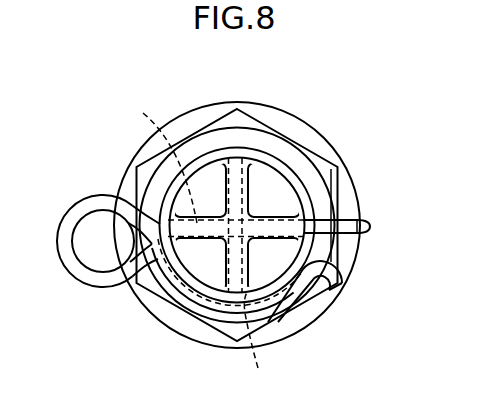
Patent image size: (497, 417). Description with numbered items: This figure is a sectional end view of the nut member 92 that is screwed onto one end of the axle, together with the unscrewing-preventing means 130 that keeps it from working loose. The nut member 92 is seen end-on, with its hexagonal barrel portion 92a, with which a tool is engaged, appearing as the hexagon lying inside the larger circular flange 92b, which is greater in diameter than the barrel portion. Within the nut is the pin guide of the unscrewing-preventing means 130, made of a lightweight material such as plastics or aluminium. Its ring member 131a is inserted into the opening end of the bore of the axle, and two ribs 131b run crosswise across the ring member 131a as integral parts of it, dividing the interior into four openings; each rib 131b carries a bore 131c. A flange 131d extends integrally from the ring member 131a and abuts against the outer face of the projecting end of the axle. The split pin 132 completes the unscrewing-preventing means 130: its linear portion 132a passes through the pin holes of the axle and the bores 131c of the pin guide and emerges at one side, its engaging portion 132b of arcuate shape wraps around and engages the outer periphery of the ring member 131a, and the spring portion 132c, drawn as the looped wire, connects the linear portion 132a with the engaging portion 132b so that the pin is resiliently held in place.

The nut member 92 is at (307, 117).
The hexagonal barrel portion 92a is at (327, 170).
The flange 92b is at (193, 121).
The unscrewing-preventing means 130 is at (205, 248).
The ring member 131a is at (175, 298).
The ribs 131b is at (270, 230).
The bore 131c is at (188, 247).
The flange 131d is at (305, 203).
The split pin 132 is at (67, 197).
The linear portion 132a is at (340, 228).
The engaging portion 132b is at (220, 313).
The spring portion 132c is at (97, 198).